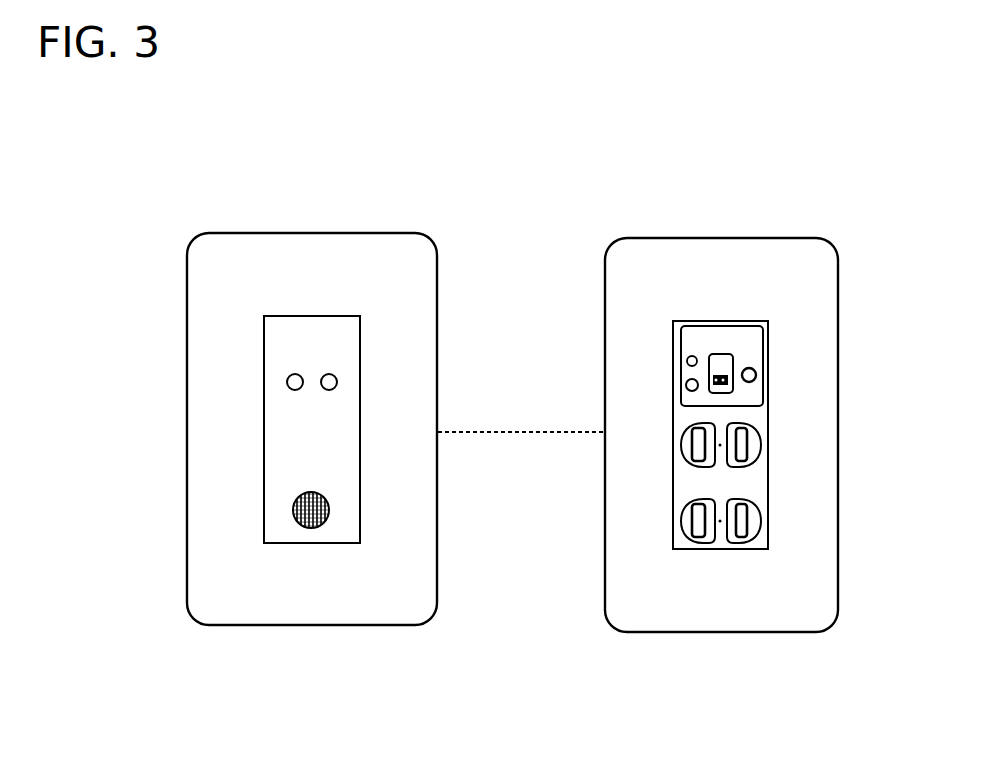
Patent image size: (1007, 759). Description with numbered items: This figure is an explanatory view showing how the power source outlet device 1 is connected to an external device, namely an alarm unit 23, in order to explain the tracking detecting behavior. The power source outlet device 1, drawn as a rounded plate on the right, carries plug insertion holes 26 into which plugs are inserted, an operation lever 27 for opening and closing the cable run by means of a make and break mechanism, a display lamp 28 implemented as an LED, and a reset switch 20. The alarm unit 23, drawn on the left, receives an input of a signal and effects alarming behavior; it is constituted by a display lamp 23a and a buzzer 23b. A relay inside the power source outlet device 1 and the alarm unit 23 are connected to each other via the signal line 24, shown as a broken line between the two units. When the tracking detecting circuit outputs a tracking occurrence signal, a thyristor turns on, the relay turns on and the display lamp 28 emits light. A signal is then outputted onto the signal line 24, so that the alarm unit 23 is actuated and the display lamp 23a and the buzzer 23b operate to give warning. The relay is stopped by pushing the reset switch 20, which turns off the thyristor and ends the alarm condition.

The power source outlet device 1 is at (718, 238).
The reset switch 20 is at (756, 379).
The alarm unit 23 is at (310, 234).
The display lamp 23a is at (329, 390).
The buzzer 23b is at (313, 528).
The signal line 24 is at (520, 432).
The plug insertion hole 26 is at (743, 445).
The operation lever 27 is at (722, 363).
The display lamp 28 is at (689, 357).